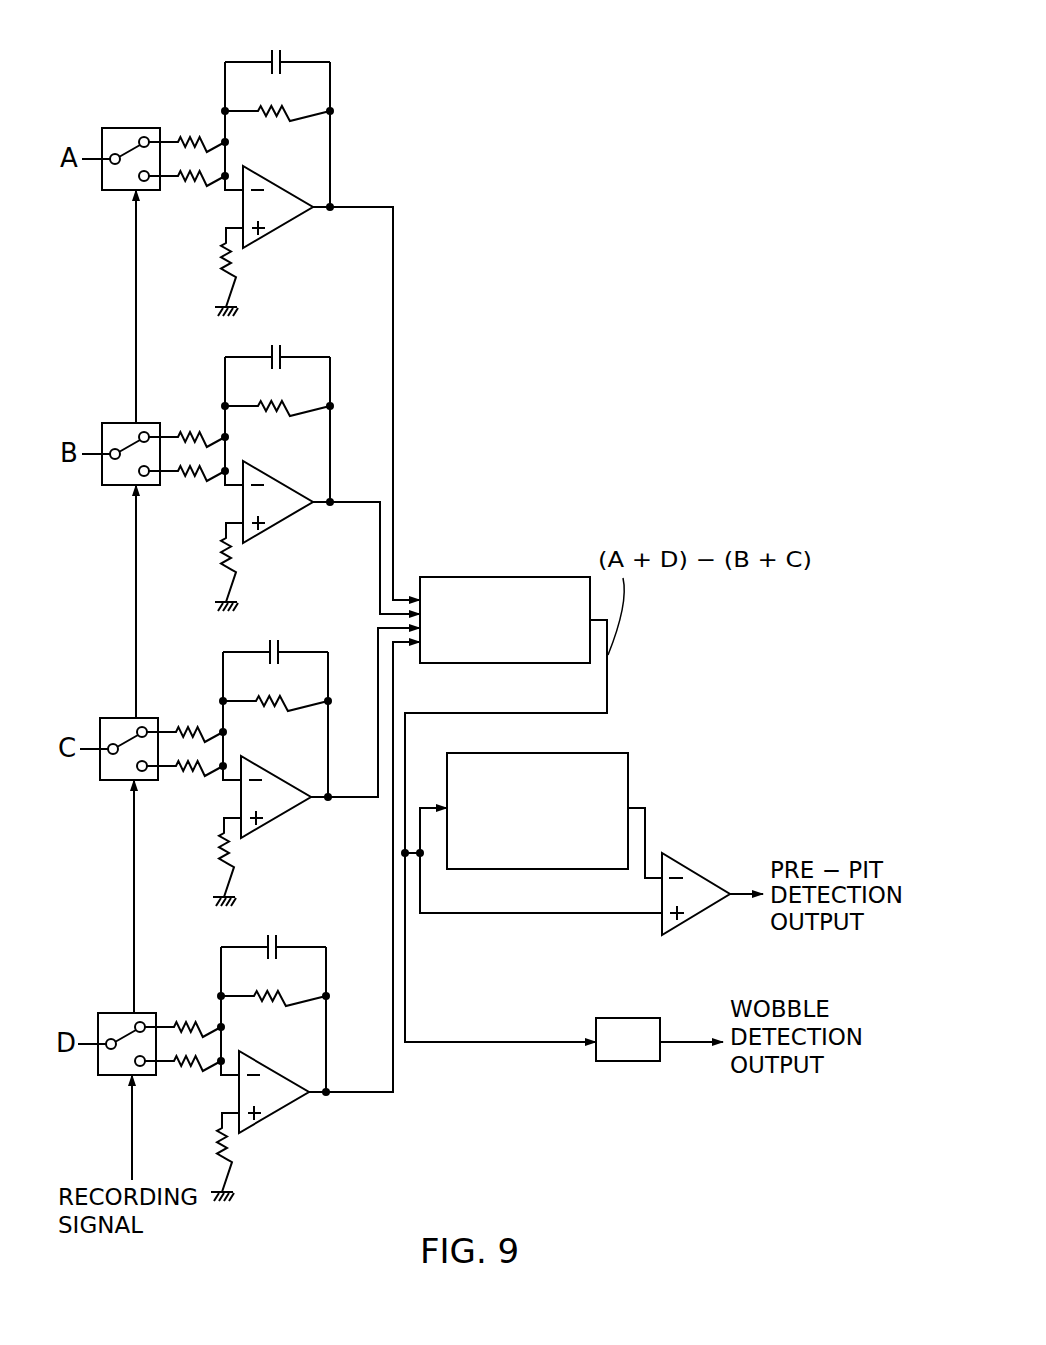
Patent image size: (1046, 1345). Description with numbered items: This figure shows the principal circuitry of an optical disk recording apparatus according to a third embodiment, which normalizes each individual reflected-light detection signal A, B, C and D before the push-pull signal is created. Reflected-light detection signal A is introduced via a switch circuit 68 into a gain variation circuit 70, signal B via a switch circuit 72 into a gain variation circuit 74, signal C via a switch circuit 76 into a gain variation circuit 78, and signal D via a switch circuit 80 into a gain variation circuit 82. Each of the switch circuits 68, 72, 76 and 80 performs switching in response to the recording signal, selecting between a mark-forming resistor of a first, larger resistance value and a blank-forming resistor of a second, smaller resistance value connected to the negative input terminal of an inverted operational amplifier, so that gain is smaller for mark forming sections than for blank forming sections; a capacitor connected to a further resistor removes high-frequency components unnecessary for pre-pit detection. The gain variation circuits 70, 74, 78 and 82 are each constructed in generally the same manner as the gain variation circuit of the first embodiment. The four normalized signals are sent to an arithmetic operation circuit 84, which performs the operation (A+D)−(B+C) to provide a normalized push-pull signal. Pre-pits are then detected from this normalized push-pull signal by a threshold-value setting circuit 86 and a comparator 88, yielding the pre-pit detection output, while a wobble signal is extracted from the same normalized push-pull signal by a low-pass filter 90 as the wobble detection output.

The switch circuit 68 is at (108, 128).
The switch circuit 72 is at (121, 523).
The switch circuit 76 is at (119, 818).
The switch circuit 80 is at (117, 1051).
The gain variation circuit 70 is at (342, 148).
The gain variation circuit 74 is at (302, 481).
The gain variation circuit 78 is at (297, 779).
The gain variation circuit 82 is at (305, 1074).
The arithmetic operation circuit 84 is at (515, 577).
The threshold-value setting circuit 86 is at (617, 753).
The comparator 88 is at (690, 858).
The low-pass filter 90 is at (630, 1062).